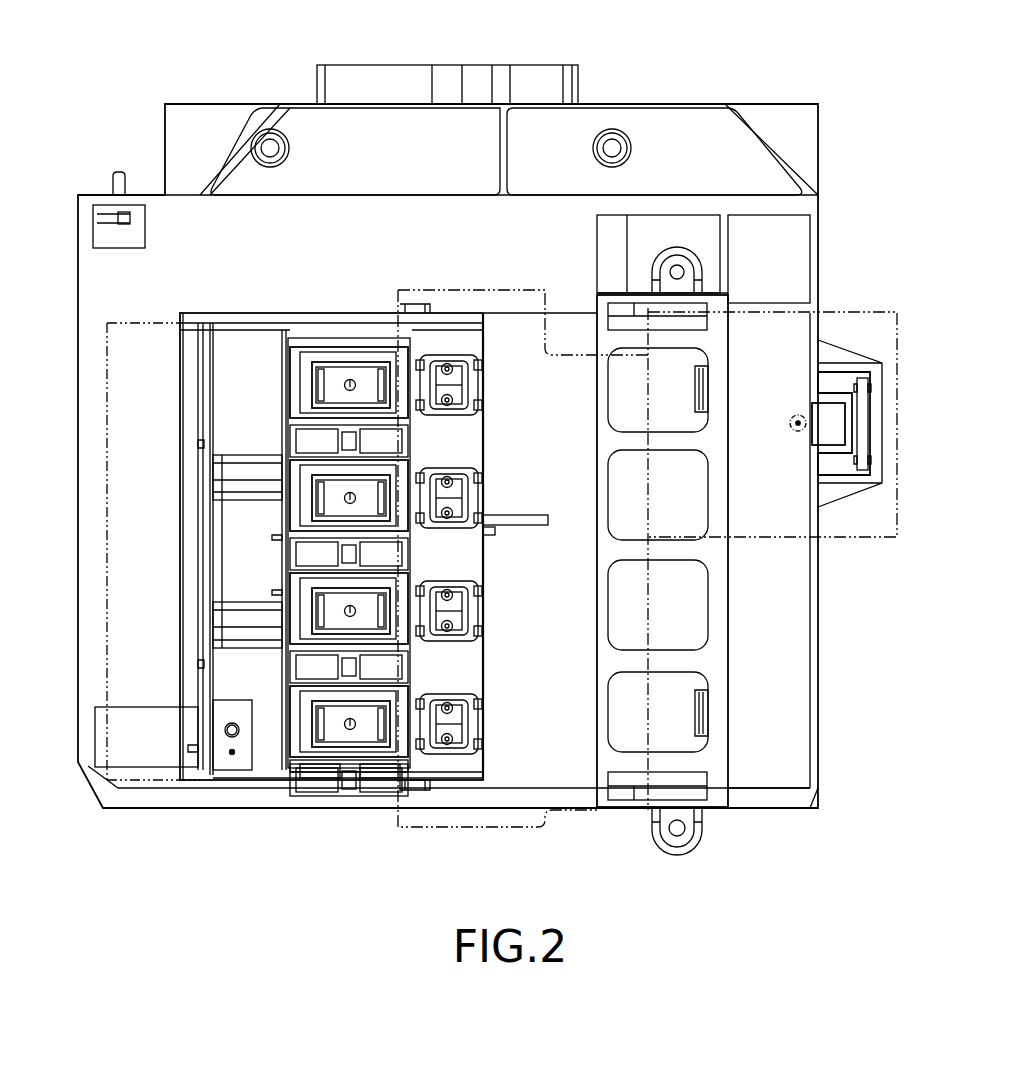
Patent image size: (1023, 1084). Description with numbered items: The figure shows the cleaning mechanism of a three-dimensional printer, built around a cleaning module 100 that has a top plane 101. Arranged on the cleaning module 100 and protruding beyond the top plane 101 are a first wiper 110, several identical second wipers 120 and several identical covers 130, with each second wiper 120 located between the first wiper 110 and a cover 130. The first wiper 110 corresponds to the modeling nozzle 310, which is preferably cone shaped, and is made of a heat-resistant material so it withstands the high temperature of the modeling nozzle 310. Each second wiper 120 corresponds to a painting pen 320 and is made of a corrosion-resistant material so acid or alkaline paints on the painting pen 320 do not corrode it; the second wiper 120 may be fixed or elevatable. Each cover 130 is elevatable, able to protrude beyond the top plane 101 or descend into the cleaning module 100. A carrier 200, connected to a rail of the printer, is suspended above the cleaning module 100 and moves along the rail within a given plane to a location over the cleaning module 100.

The cleaning module 100 is at (789, 93).
The top plane 101 is at (527, 245).
The first wiper 110 is at (862, 413).
The second wiper 120 is at (436, 719).
The cover 130 is at (310, 772).
The carrier 200 is at (514, 834).
The modeling nozzle 310 is at (797, 431).
The painting pen 320 is at (345, 762).